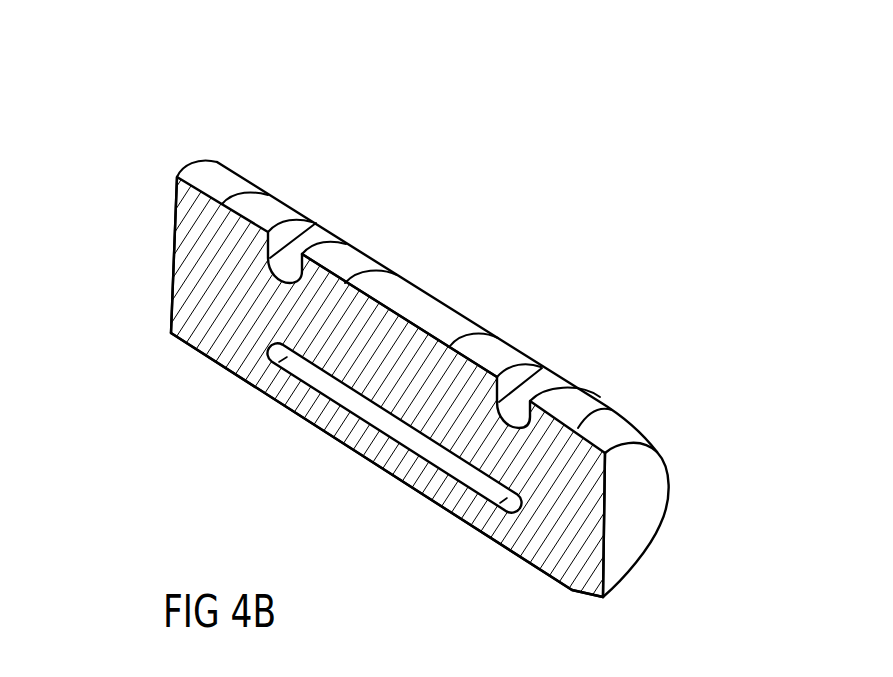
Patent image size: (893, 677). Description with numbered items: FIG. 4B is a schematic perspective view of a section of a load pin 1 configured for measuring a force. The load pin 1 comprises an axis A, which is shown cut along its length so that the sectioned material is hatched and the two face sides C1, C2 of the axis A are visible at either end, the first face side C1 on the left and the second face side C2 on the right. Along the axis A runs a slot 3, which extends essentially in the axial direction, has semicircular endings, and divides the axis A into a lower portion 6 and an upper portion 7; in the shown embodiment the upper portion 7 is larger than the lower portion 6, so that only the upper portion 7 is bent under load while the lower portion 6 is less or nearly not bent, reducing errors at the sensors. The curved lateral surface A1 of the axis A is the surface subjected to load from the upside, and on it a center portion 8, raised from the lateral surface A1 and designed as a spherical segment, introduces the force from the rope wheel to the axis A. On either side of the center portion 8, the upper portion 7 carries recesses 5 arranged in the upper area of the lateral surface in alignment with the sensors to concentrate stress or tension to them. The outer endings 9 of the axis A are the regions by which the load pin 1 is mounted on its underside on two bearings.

The load pin 1 is at (170, 138).
The slot 3 is at (407, 441).
The recesses 5 is at (311, 236).
The lower portion 6 is at (344, 294).
The upper portion 7 is at (337, 427).
The center portion 8 is at (415, 292).
The endings 9 is at (264, 202).
The axis A is at (655, 487).
The lateral surface A1 is at (446, 320).
The face side C1 is at (172, 260).
The face side C2 is at (635, 533).